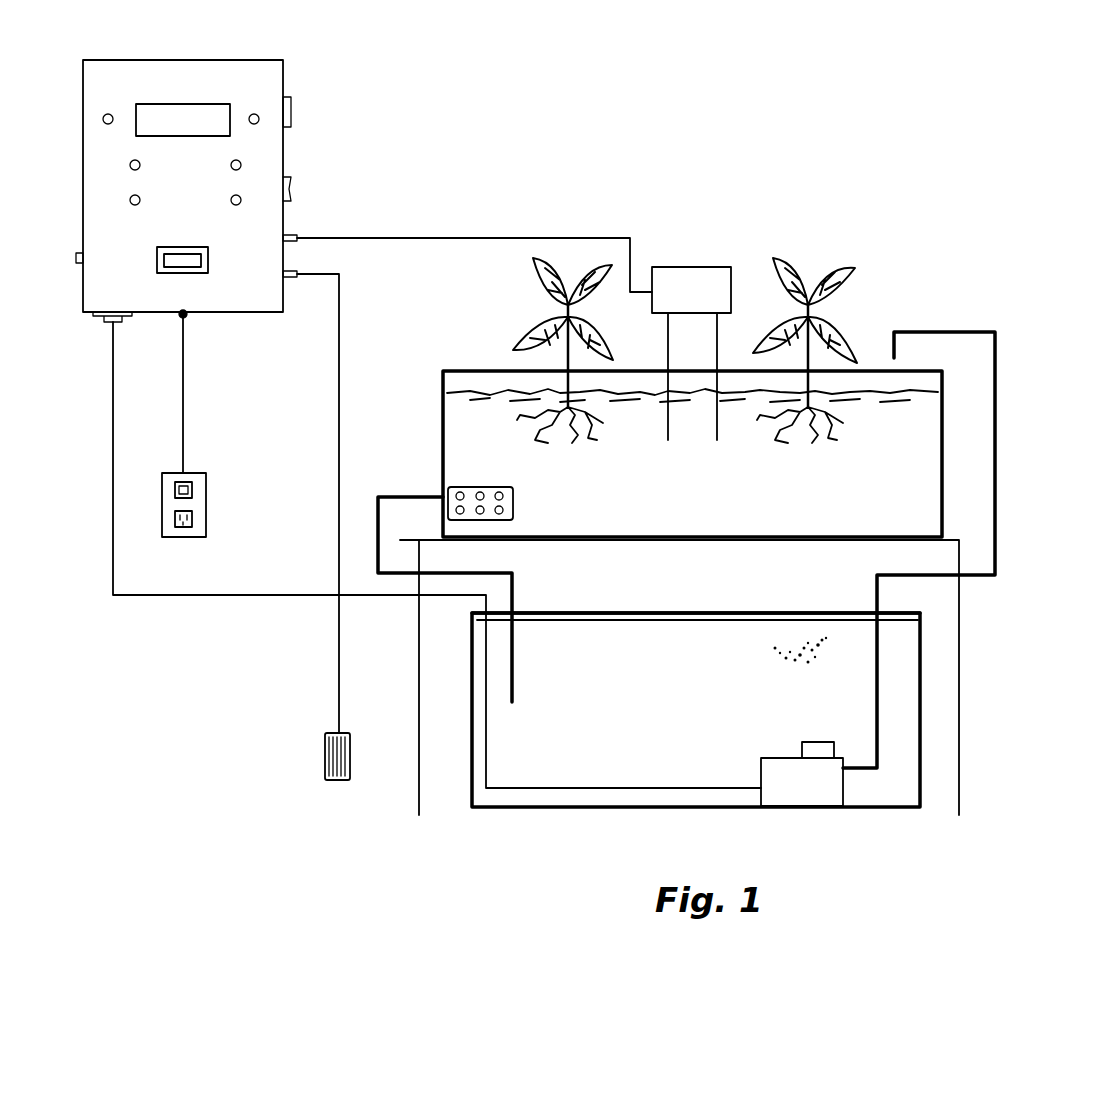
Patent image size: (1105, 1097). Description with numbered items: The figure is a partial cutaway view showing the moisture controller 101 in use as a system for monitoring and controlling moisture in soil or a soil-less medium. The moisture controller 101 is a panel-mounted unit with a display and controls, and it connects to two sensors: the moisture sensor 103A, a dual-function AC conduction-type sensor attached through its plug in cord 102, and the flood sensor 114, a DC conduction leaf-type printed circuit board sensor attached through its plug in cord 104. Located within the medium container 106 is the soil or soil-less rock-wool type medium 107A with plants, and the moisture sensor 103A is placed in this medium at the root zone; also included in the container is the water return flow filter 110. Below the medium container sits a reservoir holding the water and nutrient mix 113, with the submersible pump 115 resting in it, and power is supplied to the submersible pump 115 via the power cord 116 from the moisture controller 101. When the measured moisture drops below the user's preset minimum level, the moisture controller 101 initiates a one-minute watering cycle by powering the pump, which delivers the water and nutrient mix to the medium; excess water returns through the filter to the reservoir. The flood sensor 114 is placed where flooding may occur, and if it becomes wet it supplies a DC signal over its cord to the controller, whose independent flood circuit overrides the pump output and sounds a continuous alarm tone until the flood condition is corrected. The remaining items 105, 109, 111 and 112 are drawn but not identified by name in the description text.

The moisture controller 101 is at (262, 85).
The plug in cord 102 is at (440, 238).
The moisture sensor 103A is at (692, 267).
The plug in cord 104 is at (339, 357).
The return pipe 105 is at (925, 332).
The medium container 106 is at (493, 370).
The soil or soil-less rock-wool type medium 107A is at (877, 390).
The supply pipe 109 is at (425, 497).
The water return flow filter 110 is at (490, 487).
The reservoir lid 111 is at (627, 613).
The reservoir 112 is at (959, 753).
The water and nutrient mix 113 is at (857, 632).
The flood sensor 114 is at (325, 760).
The submersible pump 115 is at (761, 770).
The power cord 116 is at (228, 595).